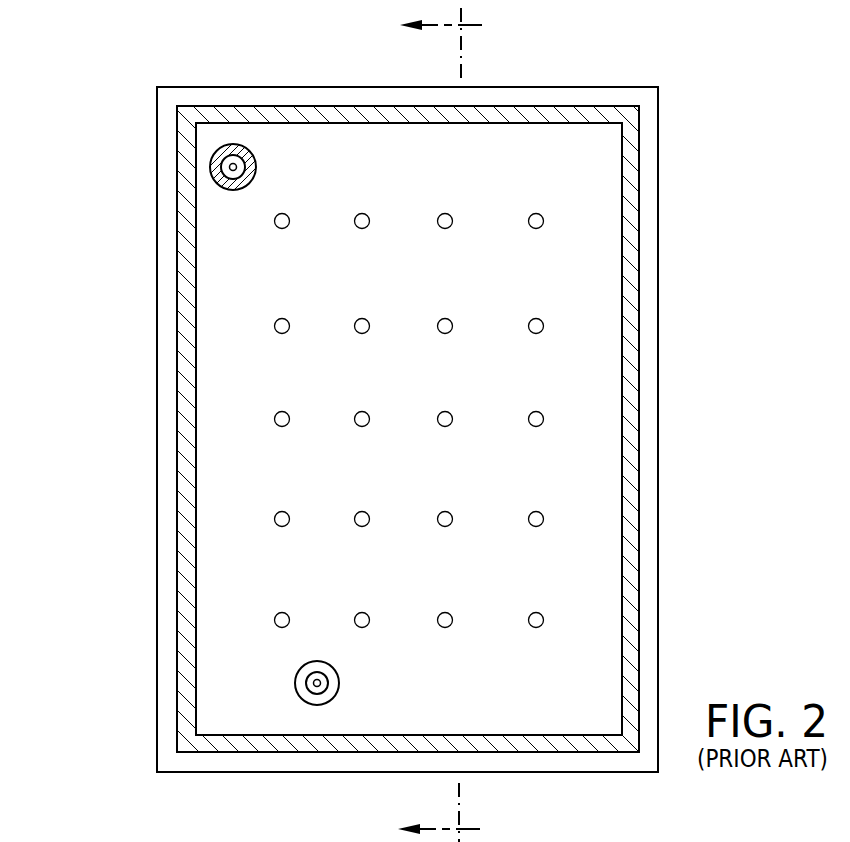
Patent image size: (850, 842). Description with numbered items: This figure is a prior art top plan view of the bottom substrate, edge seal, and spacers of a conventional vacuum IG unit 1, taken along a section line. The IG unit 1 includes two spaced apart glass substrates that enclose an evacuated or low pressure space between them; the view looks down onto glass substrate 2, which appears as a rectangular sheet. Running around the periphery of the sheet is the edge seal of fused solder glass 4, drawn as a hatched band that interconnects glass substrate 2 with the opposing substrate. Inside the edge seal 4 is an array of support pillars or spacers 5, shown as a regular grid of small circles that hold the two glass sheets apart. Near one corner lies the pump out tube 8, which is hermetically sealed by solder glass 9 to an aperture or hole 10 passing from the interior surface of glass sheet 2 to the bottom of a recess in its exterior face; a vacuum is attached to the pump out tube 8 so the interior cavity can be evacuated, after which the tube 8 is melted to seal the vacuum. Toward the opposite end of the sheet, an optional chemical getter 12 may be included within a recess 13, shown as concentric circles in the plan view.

The IG unit 1 is at (401, 438).
The glass substrate 2 is at (400, 97).
The edge seal of fused solder glass 4 is at (297, 108).
The support pillars or spacers 5 is at (544, 325).
The pump out tube 8 is at (179, 222).
The solder glass 9 is at (233, 190).
The aperture or hole 10 is at (231, 168).
The chemical getter 12 is at (312, 689).
The recess 13 is at (312, 741).